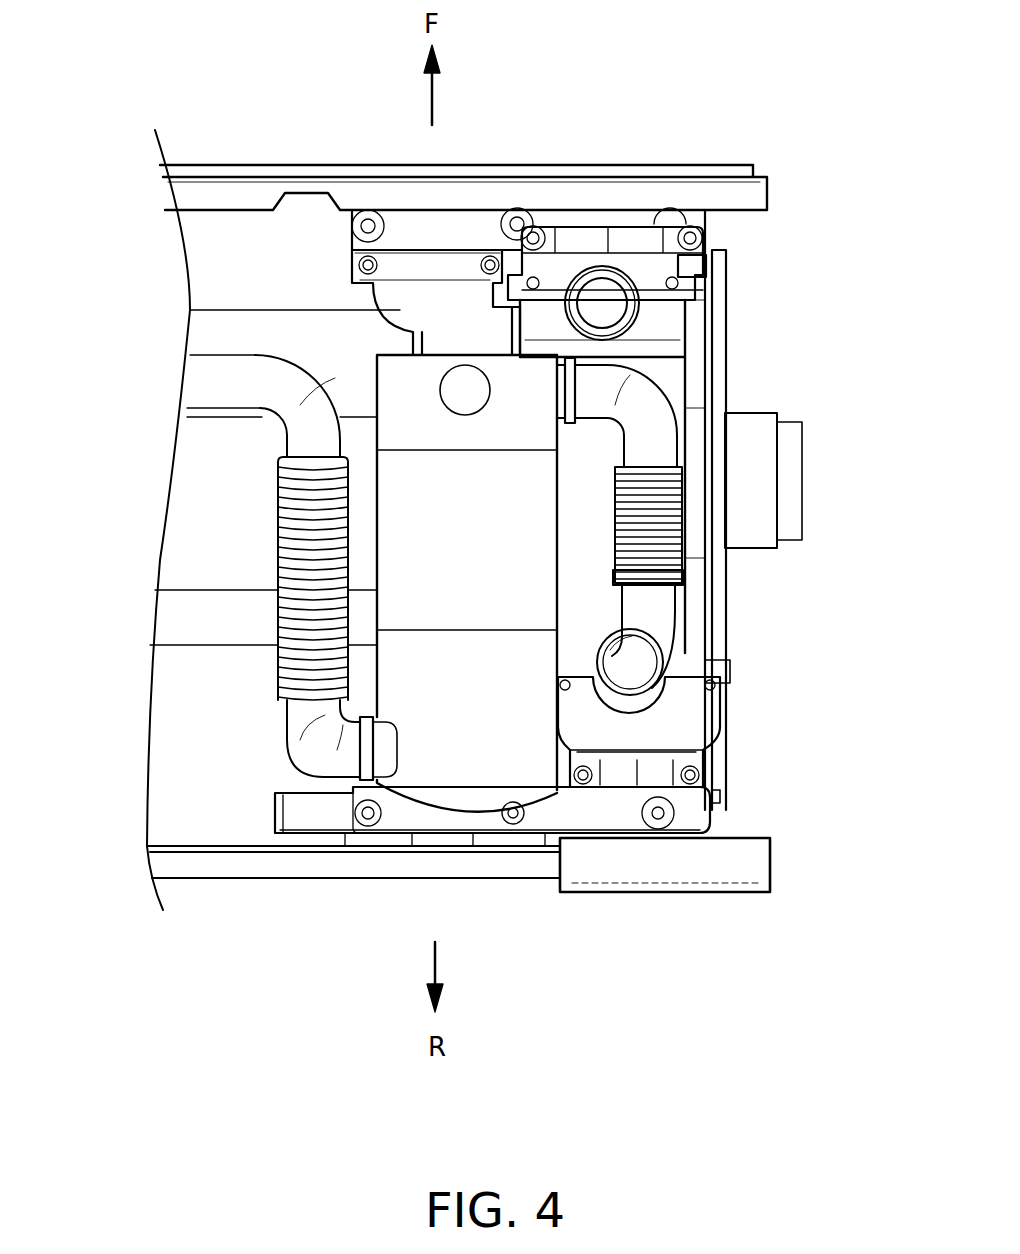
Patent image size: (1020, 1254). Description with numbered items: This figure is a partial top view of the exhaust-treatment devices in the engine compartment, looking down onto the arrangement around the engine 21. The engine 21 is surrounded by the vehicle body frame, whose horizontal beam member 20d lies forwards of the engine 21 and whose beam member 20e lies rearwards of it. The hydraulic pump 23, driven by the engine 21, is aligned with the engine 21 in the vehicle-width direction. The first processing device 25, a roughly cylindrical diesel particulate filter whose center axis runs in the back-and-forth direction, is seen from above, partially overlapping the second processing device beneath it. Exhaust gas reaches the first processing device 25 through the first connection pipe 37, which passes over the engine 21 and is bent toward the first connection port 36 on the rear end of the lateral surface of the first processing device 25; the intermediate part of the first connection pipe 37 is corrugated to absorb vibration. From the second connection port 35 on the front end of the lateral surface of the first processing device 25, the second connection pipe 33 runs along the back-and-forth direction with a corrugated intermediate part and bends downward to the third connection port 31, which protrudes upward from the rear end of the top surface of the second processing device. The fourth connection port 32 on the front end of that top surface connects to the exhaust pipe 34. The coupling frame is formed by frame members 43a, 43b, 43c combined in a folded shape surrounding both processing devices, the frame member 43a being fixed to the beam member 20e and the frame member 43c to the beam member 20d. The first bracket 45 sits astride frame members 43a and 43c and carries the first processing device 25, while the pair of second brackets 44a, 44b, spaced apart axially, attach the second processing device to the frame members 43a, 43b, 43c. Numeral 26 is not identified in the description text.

The beam member 20d is at (235, 165).
The beam member 20e is at (217, 868).
The engine 21 is at (200, 508).
The hydraulic pump 23 is at (762, 490).
The first processing device 25 is at (492, 770).
The housing 26 is at (663, 322).
The third connection port 31 is at (637, 690).
The fourth connection port 32 is at (690, 267).
The second connection pipe 33 is at (660, 565).
The exhaust pipe 34 is at (593, 280).
The second connection port 35 is at (578, 363).
The first connection port 36 is at (393, 780).
The first connection pipe 37 is at (277, 667).
The frame member 43a is at (587, 812).
The frame member 43b is at (718, 381).
The frame member 43c is at (470, 230).
The second bracket 44a is at (690, 705).
The second bracket 44b is at (637, 240).
The first bracket 45 is at (412, 262).